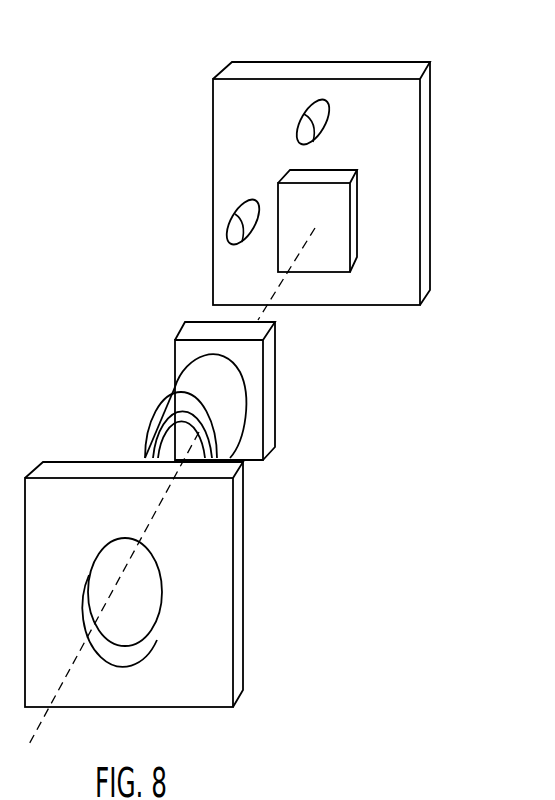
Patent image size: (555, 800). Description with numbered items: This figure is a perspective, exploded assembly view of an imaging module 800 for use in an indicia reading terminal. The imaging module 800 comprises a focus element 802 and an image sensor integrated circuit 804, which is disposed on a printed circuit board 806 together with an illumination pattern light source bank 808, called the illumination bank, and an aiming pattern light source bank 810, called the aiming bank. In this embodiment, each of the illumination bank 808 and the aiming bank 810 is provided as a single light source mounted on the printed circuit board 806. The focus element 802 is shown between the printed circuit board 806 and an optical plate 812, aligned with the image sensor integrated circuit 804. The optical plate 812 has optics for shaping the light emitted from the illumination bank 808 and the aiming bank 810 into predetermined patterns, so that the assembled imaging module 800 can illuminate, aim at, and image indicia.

The imaging module 800 is at (464, 55).
The focus element 802 is at (143, 381).
The image sensor integrated circuit 804 is at (353, 248).
The printed circuit board 806 is at (410, 212).
The illumination pattern light source bank 808 is at (242, 207).
The aiming pattern light source bank 810 is at (320, 115).
The optical plate 812 is at (220, 588).